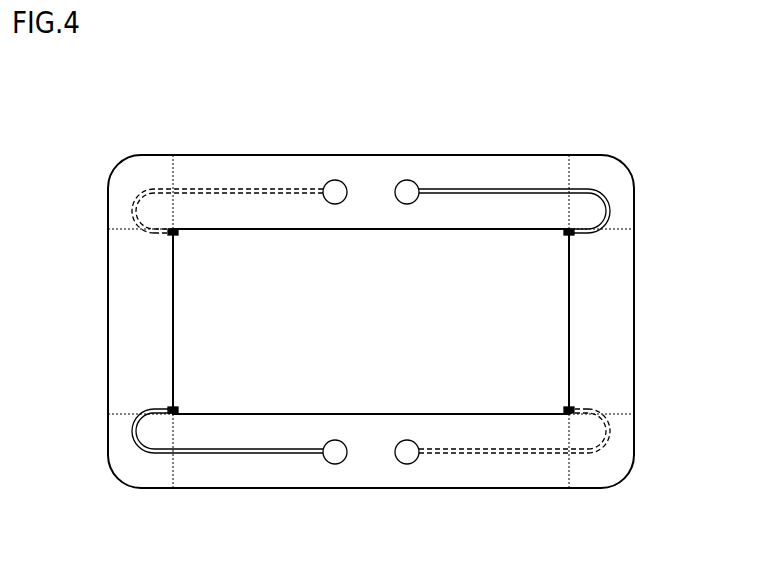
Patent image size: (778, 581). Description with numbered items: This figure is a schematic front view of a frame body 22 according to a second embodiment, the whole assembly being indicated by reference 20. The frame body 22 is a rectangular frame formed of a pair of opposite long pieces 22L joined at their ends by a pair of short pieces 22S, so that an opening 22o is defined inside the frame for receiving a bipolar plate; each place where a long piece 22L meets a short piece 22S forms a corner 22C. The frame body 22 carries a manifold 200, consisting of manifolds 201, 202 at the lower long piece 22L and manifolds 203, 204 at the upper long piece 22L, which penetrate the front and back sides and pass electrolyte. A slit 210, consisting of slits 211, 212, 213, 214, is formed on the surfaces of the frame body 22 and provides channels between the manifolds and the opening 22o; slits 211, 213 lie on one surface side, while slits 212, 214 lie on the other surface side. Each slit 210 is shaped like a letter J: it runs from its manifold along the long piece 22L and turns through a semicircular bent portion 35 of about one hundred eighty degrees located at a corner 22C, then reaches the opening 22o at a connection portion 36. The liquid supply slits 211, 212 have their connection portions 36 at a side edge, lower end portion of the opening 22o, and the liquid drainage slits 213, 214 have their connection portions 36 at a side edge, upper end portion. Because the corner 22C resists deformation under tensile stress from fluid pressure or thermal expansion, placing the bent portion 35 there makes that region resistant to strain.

The display unit 20 is at (381, 323).
The frame body 22 is at (364, 327).
The corner 22C is at (142, 167).
The long piece 22L is at (362, 168).
The short piece 22S is at (128, 320).
The opening 22o is at (561, 324).
The bent portion 35 is at (132, 210).
The connection portion 36 is at (170, 234).
The manifold 200 is at (511, 318).
The manifold 201 is at (330, 465).
The manifold 202 is at (408, 465).
The manifold 203 is at (405, 180).
The manifold 204 is at (330, 180).
The slit 210 is at (374, 333).
The liquid supply slit 211 is at (238, 455).
The liquid supply slit 212 is at (497, 456).
The liquid drainage slit 213 is at (455, 188).
The liquid drainage slit 214 is at (262, 189).